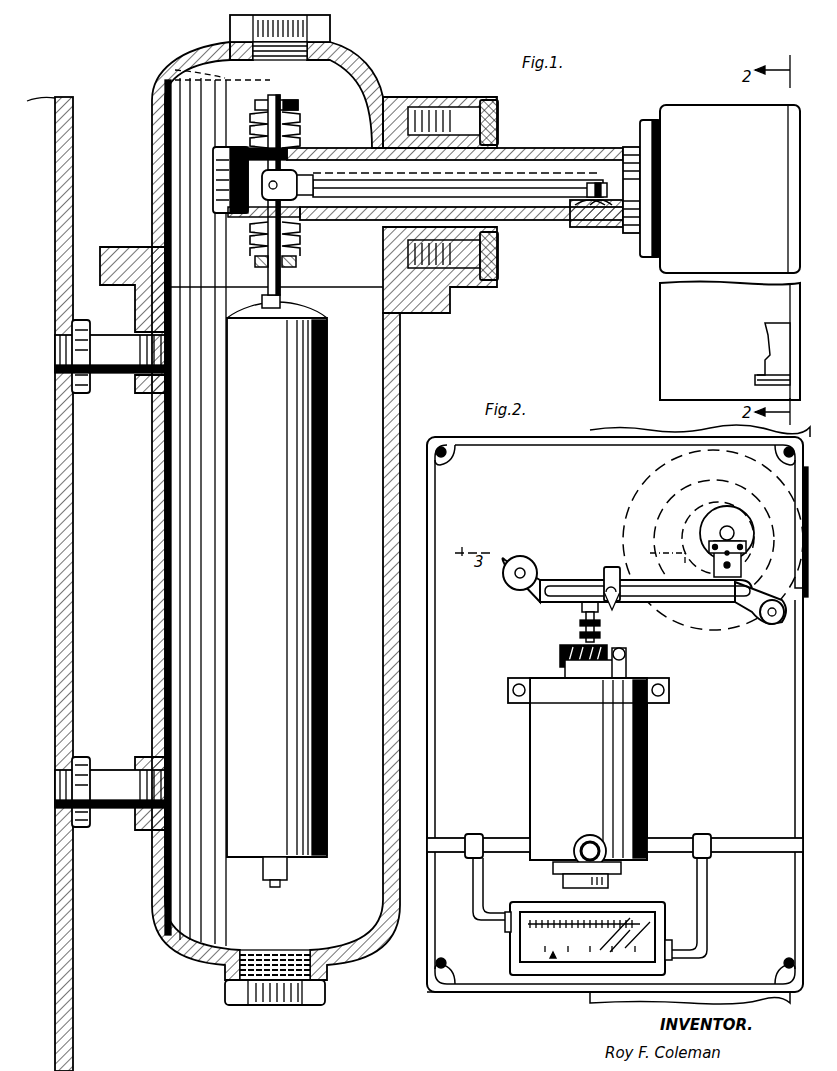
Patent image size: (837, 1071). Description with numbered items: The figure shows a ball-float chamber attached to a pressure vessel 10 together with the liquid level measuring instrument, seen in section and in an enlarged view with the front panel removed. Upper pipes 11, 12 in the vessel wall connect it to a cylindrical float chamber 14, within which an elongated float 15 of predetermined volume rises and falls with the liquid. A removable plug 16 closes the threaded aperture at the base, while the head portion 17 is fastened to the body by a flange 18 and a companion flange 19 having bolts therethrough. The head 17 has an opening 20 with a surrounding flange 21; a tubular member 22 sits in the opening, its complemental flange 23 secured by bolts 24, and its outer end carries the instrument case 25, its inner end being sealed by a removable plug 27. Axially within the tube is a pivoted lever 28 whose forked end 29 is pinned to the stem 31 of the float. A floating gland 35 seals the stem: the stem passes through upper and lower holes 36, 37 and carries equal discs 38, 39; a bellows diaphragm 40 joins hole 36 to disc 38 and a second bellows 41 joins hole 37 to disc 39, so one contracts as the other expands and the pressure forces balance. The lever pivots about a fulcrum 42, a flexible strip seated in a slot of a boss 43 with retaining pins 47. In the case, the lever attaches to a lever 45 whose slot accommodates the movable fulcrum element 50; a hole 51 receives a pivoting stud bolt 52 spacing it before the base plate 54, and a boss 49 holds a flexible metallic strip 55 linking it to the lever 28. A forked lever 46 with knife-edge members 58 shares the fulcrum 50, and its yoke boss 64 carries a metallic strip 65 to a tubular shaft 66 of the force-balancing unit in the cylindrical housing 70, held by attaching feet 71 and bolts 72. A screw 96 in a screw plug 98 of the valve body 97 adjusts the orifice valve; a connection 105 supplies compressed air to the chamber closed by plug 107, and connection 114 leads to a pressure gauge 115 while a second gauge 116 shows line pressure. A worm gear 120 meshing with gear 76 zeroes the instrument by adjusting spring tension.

In FIG. 1, the pressure vessel 10 is at (75, 130).
In FIG. 1, the upper pipe 11 is at (118, 378).
In FIG. 1, the upper pipe 12 is at (110, 770).
In FIG. 1, the float chamber 14 is at (360, 408).
In FIG. 2, the float chamber 14 is at (600, 1003).
In FIG. 1, the float 15 is at (275, 480).
In FIG. 1, the removable plug 16 is at (290, 1005).
In FIG. 1, the head portion 17 is at (215, 188).
In FIG. 2, the head portion 17 is at (610, 430).
In FIG. 1, the flange 18 is at (125, 247).
In FIG. 1, the bracket spacer 19 is at (85, 283).
In FIG. 1, the opening 20 is at (390, 224).
In FIG. 1, the flange 21 is at (412, 278).
In FIG. 1, the tubular member 22 is at (528, 150).
In FIG. 1, the complemental flange 23 is at (468, 97).
In FIG. 2, the complemental flange 23 is at (655, 478).
In FIG. 1, the bolts 24 is at (498, 122).
In FIG. 1, the instrument case 25 is at (710, 125).
In FIG. 1, the removable plug 27 is at (218, 178).
In FIG. 1, the pivoted lever 28 is at (570, 202).
In FIG. 2, the pivoted lever 28 is at (728, 528).
In FIG. 1, the forked end 29 is at (312, 150).
In FIG. 1, the stem 31 is at (297, 298).
In FIG. 1, the floating gland 35 is at (250, 98).
In FIG. 1, the upper hole 36 is at (265, 152).
In FIG. 1, the lower hole 37 is at (300, 217).
In FIG. 1, the disc 38 is at (275, 101).
In FIG. 1, the disc 39 is at (296, 264).
In FIG. 1, the bellows diaphragm 40 is at (300, 122).
In FIG. 1, the second bellows 41 is at (300, 250).
In FIG. 1, the fulcrum 42 is at (598, 198).
In FIG. 1, the boss 43 is at (573, 228).
In FIG. 2, the lever 45 is at (545, 576).
In FIG. 2, the forked lever 46 is at (648, 603).
In FIG. 1, the retaining pins 47 is at (625, 228).
In FIG. 2, the boss 49 is at (750, 590).
In FIG. 2, the fulcrum element 50 is at (612, 566).
In FIG. 2, the hole 51 is at (672, 566).
In FIG. 2, the pivoting stud bolt 52 is at (520, 566).
In FIG. 2, the base plate 54 is at (486, 950).
In FIG. 2, the flexible metallic strip 55 is at (748, 555).
In FIG. 2, the knife-edge member 58 is at (575, 590).
In FIG. 2, the boss 64 is at (582, 607).
In FIG. 2, the metallic strip 65 is at (582, 625).
In FIG. 2, the tubular shaft 66 is at (562, 650).
In FIG. 2, the cylindrical housing 70 is at (548, 785).
In FIG. 2, the attaching feet 71 is at (660, 705).
In FIG. 2, the bolts 72 is at (512, 690).
In FIG. 2, the gear 76 is at (565, 664).
In FIG. 2, the screw 96 is at (588, 838).
In FIG. 2, the valve body 97 is at (574, 850).
In FIG. 2, the screw plug 98 is at (598, 835).
In FIG. 2, the connection 105 is at (738, 838).
In FIG. 2, the screw-threaded plug 107 is at (562, 876).
In FIG. 2, the connection 114 is at (452, 838).
In FIG. 2, the pressure gauge 115 is at (640, 932).
In FIG. 2, the second gauge 116 is at (660, 955).
In FIG. 2, the worm gear 120 is at (628, 654).